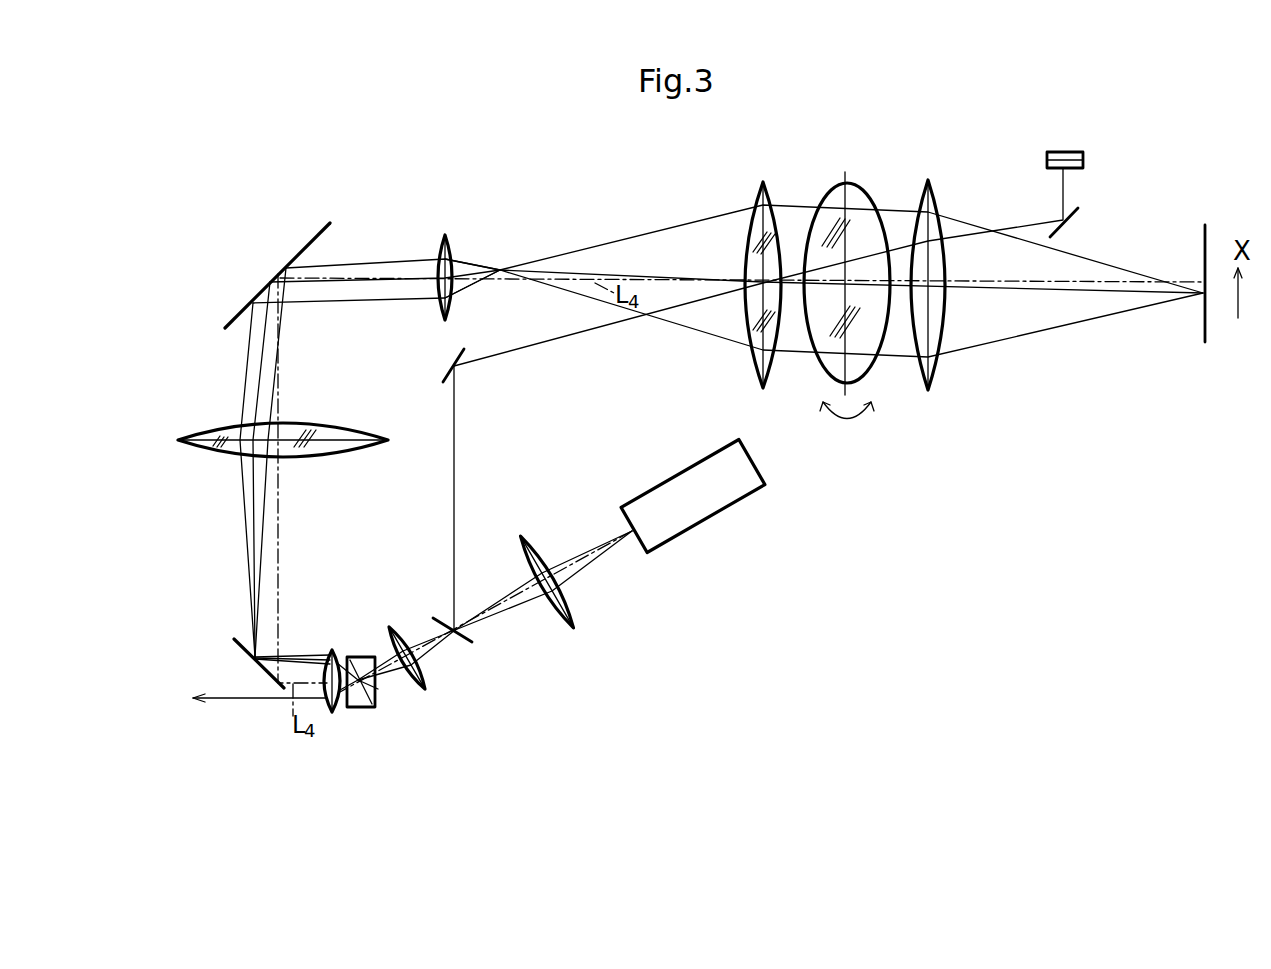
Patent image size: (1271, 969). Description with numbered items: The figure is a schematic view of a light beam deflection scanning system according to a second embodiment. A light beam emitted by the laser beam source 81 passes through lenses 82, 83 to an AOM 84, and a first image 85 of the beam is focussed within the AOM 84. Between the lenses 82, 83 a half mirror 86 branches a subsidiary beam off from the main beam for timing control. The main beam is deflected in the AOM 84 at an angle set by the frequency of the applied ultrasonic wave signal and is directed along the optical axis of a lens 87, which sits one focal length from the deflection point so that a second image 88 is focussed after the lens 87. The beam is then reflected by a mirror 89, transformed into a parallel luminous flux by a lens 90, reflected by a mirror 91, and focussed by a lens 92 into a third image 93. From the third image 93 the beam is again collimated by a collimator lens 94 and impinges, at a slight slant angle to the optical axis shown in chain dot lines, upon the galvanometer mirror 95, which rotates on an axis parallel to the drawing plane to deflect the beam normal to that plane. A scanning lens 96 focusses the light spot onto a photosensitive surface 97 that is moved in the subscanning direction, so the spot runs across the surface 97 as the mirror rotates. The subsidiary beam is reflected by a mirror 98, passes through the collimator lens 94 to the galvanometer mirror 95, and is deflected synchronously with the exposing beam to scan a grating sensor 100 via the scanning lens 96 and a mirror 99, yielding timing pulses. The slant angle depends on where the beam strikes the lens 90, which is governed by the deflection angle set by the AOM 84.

The laser beam source 81 is at (695, 528).
The lens 82 is at (567, 602).
The lens 83 is at (423, 679).
The AOM 84 is at (363, 708).
The first image 85 is at (360, 660).
The half mirror 86 is at (473, 638).
The lens 87 is at (323, 654).
The second image 88 is at (286, 656).
The mirror 89 is at (255, 666).
The lens 90 is at (358, 428).
The mirror 91 is at (310, 242).
The lens 92 is at (445, 243).
The third image 93 is at (500, 266).
The collimator lens 94 is at (757, 202).
The galvanometer mirror 95 is at (853, 188).
The scanning lens 96 is at (936, 196).
The photosensitive surface 97 is at (1203, 238).
The mirror 98 is at (457, 353).
The mirror 99 is at (1076, 212).
The grating sensor 100 is at (1084, 155).